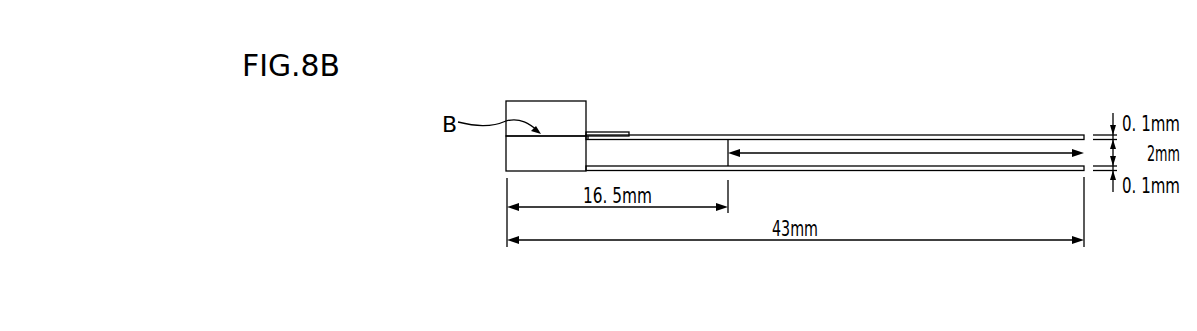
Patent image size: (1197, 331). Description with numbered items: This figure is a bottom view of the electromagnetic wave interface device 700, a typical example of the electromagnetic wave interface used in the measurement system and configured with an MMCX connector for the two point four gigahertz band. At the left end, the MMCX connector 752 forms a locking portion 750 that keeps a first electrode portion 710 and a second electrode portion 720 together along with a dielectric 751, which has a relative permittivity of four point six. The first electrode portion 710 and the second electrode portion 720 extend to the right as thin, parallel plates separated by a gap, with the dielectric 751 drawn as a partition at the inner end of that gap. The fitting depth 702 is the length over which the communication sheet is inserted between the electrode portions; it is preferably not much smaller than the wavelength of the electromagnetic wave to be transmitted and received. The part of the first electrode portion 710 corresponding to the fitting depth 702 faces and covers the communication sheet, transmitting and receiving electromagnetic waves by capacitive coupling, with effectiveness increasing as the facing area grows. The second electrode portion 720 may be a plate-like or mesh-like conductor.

The electromagnetic wave interface device 700 is at (835, 128).
The fitting depth 702 is at (905, 154).
The first electrode portion 710 is at (905, 134).
The second electrode portion 720 is at (995, 171).
The locking portion 750 is at (539, 182).
The dielectric 751 is at (733, 143).
The MMCX connector 752 is at (547, 101).